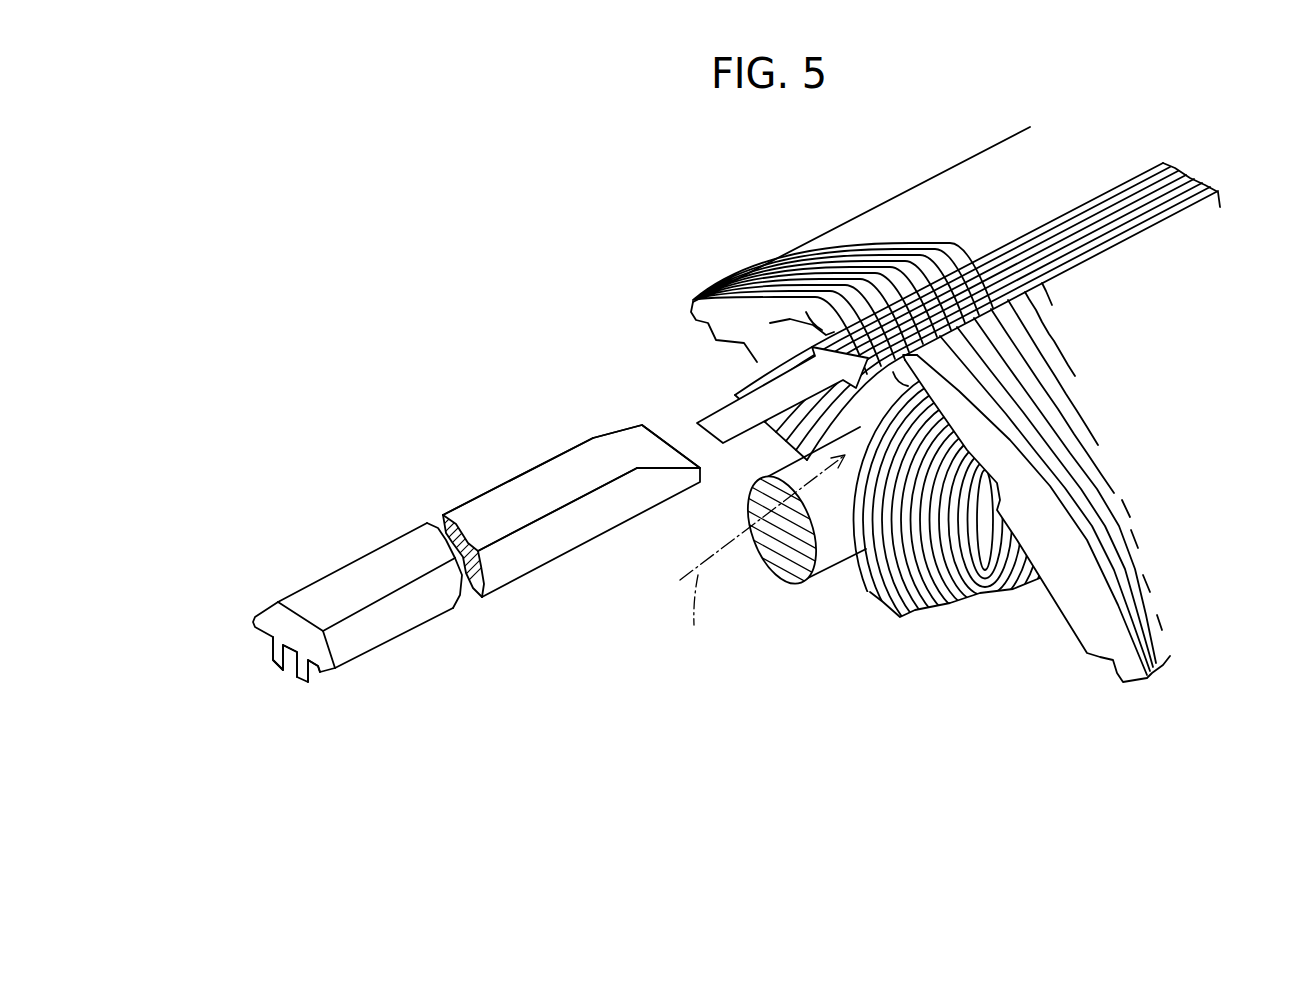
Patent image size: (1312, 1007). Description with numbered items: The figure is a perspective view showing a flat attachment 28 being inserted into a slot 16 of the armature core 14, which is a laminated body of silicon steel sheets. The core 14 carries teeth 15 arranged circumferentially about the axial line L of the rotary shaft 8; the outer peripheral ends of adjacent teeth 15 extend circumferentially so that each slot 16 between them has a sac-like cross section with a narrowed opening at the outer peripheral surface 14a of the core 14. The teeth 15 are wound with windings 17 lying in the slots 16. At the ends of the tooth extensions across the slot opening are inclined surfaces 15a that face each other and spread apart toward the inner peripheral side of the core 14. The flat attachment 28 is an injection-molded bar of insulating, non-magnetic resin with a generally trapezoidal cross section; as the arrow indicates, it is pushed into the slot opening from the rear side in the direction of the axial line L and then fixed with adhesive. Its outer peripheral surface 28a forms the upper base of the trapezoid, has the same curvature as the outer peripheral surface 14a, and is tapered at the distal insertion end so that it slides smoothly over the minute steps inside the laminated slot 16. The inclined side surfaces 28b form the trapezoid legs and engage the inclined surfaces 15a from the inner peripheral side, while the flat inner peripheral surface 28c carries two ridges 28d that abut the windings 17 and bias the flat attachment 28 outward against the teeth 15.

The rotary shaft 8 is at (840, 552).
The core 14 is at (892, 196).
The outer peripheral surface 14a is at (963, 192).
The teeth 15 is at (700, 322).
The inclined surfaces 15a is at (817, 320).
The slot 16 is at (782, 530).
The windings 17 is at (742, 378).
The flat attachment 28 is at (489, 491).
The outer peripheral surface 28a is at (538, 487).
The side surfaces 28b is at (467, 502).
The inner peripheral surface 28c is at (318, 675).
The ridges 28d is at (300, 677).
The axial line L is at (762, 555).